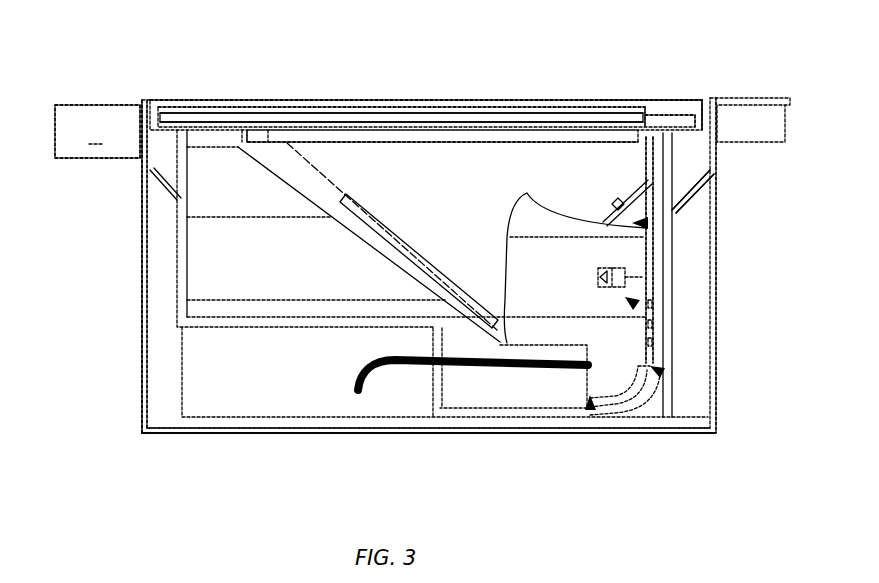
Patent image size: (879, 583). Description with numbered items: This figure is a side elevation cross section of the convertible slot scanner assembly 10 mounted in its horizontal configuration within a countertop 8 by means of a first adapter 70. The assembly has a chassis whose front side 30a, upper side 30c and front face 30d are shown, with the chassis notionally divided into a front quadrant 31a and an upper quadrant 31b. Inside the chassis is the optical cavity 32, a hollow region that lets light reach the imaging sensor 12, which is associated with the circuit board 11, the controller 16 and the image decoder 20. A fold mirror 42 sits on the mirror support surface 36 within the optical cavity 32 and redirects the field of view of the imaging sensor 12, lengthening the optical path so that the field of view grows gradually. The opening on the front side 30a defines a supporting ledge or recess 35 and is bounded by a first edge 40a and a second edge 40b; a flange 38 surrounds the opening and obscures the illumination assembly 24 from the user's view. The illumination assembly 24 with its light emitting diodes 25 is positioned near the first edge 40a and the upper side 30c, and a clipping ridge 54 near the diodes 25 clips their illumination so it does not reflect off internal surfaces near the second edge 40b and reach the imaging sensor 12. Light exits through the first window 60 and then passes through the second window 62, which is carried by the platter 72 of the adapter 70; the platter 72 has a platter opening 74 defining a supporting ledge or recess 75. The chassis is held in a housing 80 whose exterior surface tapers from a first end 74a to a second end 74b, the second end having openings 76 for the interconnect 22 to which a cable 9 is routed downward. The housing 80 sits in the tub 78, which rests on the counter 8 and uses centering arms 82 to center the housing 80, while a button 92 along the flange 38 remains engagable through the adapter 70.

The countertop 8 is at (97, 107).
The cable 9 is at (405, 370).
The convertible slot scanner assembly 10 is at (64, 362).
The circuit board 11 is at (668, 252).
The imaging sensor 12 is at (655, 262).
The controller 16 is at (655, 298).
The image decoder 20 is at (636, 305).
The interconnect 22 is at (625, 400).
The illumination assembly 24 is at (648, 223).
The light emitting diodes 25 is at (615, 198).
The front side 30a is at (148, 61).
The upper side 30c is at (662, 372).
The front face 30d is at (194, 122).
The front quadrant 31a is at (778, 150).
The upper quadrant 31b is at (690, 45).
The optical cavity 32 is at (483, 170).
The supporting ledge or recess 35 is at (243, 138).
The mirror support surface 36 is at (397, 248).
The flange 38 is at (93, 105).
The first edge 40a is at (612, 100).
The second edge 40b is at (281, 104).
The fold mirror 42 is at (370, 222).
The clipping ridge 54 is at (527, 193).
The first window 60 is at (383, 137).
The second window 62 is at (428, 117).
The adapter 70 is at (680, 115).
The platter 72 is at (229, 100).
The exterior surface 74 is at (262, 95).
The first end 74a is at (80, 212).
The second end 74b is at (120, 455).
The supporting ledge or recess 75 is at (650, 110).
The openings 76 is at (590, 410).
The tub 78 is at (143, 395).
The housing 80 is at (177, 310).
The centering arms 82 is at (160, 192).
The button 92 is at (650, 147).